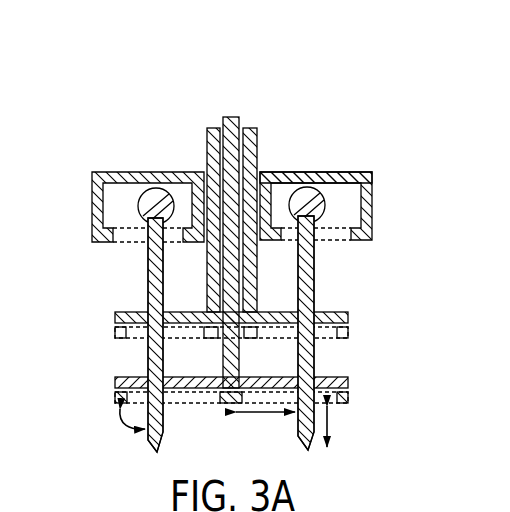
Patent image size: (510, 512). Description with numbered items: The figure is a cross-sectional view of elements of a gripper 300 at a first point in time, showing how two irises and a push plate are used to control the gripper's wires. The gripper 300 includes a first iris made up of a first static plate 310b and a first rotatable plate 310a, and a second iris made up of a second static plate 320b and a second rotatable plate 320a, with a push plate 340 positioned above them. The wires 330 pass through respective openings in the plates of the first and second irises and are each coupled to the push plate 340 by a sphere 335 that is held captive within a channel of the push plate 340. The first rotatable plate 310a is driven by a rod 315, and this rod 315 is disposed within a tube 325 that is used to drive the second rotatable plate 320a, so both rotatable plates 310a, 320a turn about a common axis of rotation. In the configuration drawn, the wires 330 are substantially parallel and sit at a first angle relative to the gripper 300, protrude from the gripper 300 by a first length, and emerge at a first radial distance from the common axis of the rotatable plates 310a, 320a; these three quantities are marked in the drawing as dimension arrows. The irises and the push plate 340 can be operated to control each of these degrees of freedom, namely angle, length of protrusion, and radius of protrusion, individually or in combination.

The gripper 300 is at (313, 78).
The first rotatable plate 310a is at (355, 382).
The first static plate 310b is at (355, 397).
The rod 315 is at (232, 127).
The second rotatable plate 320a is at (107, 317).
The second static plate 320b is at (107, 331).
The tube 325 is at (248, 128).
The wires 330 is at (315, 270).
The sphere 335 is at (317, 200).
The push plate 340 is at (303, 180).